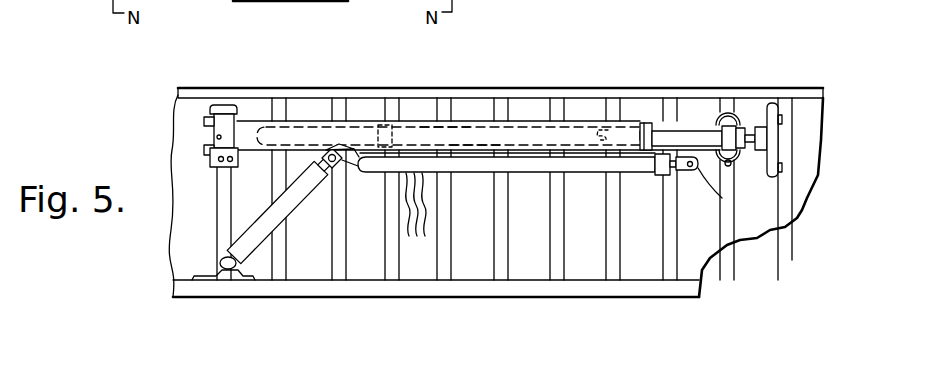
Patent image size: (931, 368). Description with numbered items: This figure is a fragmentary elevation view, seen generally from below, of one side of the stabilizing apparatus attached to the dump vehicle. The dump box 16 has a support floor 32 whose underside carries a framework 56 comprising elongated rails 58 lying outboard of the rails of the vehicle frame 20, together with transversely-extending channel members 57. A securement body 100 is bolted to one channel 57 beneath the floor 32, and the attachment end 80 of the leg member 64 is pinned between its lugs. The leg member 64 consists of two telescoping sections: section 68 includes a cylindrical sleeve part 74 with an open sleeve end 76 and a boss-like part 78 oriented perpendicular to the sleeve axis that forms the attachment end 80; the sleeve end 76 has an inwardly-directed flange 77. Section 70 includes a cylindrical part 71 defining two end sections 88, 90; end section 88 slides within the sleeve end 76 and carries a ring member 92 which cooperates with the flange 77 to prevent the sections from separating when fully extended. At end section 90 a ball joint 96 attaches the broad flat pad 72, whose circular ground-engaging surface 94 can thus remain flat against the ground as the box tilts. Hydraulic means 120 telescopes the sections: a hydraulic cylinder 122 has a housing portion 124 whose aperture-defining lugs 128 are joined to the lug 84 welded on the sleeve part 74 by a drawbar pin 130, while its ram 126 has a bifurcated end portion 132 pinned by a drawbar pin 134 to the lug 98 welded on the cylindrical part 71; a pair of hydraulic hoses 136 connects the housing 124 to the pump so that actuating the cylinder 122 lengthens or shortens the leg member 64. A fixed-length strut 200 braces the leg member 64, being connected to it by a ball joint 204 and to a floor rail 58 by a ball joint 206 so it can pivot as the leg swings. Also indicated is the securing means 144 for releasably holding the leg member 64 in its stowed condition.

The dump box 16 is at (822, 85).
The frame 20 is at (553, 300).
The support floor 32 is at (311, 110).
The framework 56 is at (703, 255).
The channel member 57 is at (272, 194).
The rail 58 is at (476, 290).
The leg member 64 is at (537, 115).
The section 68 is at (424, 120).
The section 70 is at (672, 122).
The cylindrical part 71 is at (652, 122).
The pad 72 is at (779, 103).
The cylindrical sleeve part 74 is at (476, 128).
The sleeve end 76 is at (640, 133).
The inwardly-directed flange 77 is at (598, 110).
The boss-like part 78 is at (244, 126).
The attachment end 80 is at (216, 137).
The lug 84 is at (333, 168).
The end section 88 is at (292, 127).
The end section 90 is at (738, 112).
The ring member 92 is at (368, 130).
The ground-engaging surface 94 is at (780, 148).
The ball joint 96 is at (750, 150).
The lug 98 is at (692, 150).
The securement body 100 is at (213, 110).
The hydraulic means 120 is at (700, 188).
The hydraulic cylinder 122 is at (532, 173).
The housing portion 124 is at (479, 173).
The ram 126 is at (667, 176).
The aperture-defining lugs 128 is at (341, 168).
The drawbar pin 130 is at (372, 167).
The bifurcated end portion 132 is at (686, 172).
The drawbar pin 134 is at (722, 198).
The hydraulic hoses 136 is at (420, 215).
The securing means 144 is at (728, 90).
The strut 200 is at (262, 235).
The ball joint 204 is at (339, 144).
The ball joint 206 is at (226, 265).